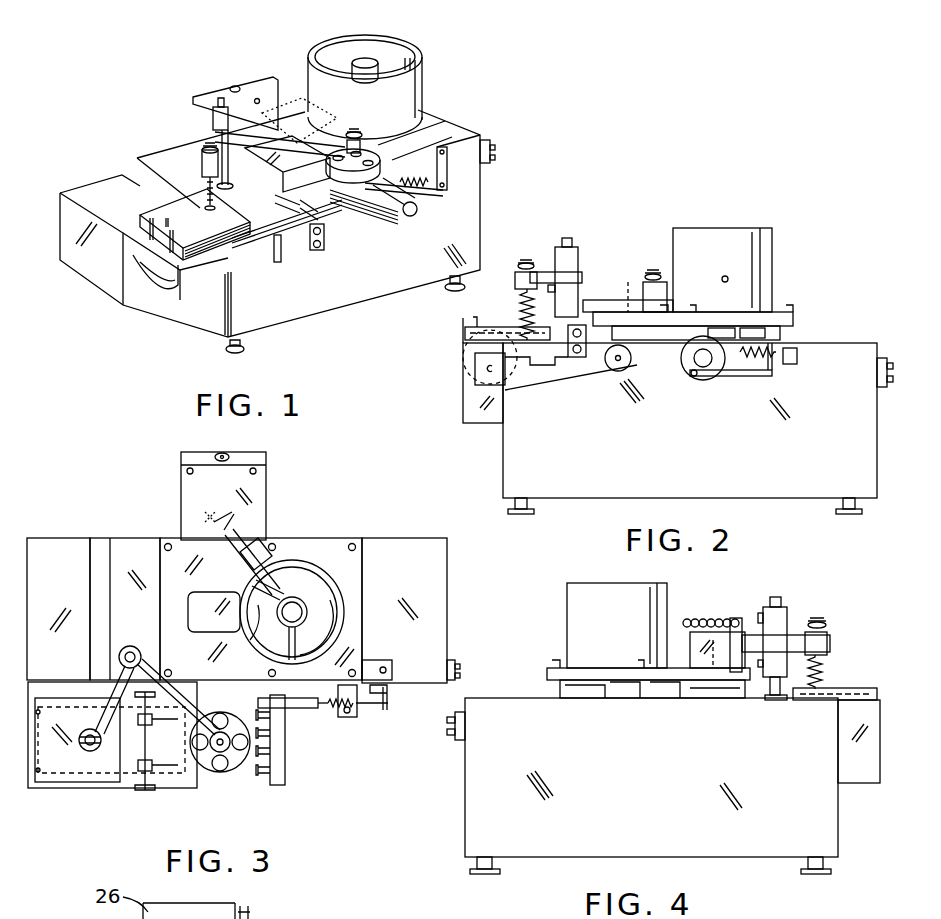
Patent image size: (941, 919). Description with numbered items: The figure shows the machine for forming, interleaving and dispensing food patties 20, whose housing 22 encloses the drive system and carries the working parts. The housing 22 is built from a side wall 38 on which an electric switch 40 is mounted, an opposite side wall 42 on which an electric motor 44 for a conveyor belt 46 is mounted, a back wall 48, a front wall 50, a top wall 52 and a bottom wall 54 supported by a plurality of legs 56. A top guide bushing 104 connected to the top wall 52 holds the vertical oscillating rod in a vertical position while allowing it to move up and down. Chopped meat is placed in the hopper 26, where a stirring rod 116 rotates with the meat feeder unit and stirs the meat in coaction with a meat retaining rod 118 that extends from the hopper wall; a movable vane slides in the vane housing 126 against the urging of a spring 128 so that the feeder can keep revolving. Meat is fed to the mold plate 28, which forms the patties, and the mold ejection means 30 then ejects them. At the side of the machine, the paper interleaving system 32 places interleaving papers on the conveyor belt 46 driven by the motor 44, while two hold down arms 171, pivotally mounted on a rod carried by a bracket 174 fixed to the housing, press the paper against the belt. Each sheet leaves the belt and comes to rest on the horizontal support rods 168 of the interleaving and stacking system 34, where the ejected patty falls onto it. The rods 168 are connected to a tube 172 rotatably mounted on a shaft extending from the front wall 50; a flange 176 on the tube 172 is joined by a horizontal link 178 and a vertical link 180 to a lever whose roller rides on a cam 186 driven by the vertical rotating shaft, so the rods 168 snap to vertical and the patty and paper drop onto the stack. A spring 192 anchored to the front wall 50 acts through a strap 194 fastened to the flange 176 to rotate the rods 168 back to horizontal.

In FIG. 1, the machine for forming, interleaving and dispensing food patties 20 is at (472, 92).
In FIG. 1, the housing 22 is at (488, 228).
In FIG. 1, the hopper 26 is at (402, 41).
In FIG. 2, the hopper 26 is at (775, 256).
In FIG. 3, the hopper 26 is at (317, 567).
In FIG. 4, the hopper 26 is at (566, 610).
In FIG. 1, the mold plate 28 is at (252, 97).
In FIG. 2, the mold plate 28 is at (664, 341).
In FIG. 3, the mold plate 28 is at (266, 490).
In FIG. 4, the mold plate 28 is at (708, 700).
In FIG. 1, the mold ejection means 30 is at (352, 128).
In FIG. 2, the mold ejection means 30 is at (648, 290).
In FIG. 3, the mold ejection means 30 is at (234, 778).
In FIG. 1, the paper interleaving system 32 is at (181, 203).
In FIG. 2, the paper interleaving system 32 is at (514, 321).
In FIG. 3, the paper interleaving system 32 is at (88, 788).
In FIG. 4, the paper interleaving system 32 is at (829, 676).
In FIG. 2, the interleaving and stacking system 34 is at (678, 388).
In FIG. 2, the side wall 38 is at (877, 447).
In FIG. 3, the side wall 38 is at (448, 583).
In FIG. 4, the side wall 38 is at (465, 813).
In FIG. 1, the electric switch 40 is at (495, 148).
In FIG. 2, the electric switch 40 is at (897, 357).
In FIG. 3, the electric switch 40 is at (454, 662).
In FIG. 4, the electric switch 40 is at (457, 741).
In FIG. 1, the opposite side wall 42 is at (205, 320).
In FIG. 2, the opposite side wall 42 is at (503, 447).
In FIG. 4, the opposite side wall 42 is at (842, 827).
In FIG. 1, the electric motor 44 is at (83, 263).
In FIG. 2, the electric motor 44 is at (466, 398).
In FIG. 3, the electric motor 44 is at (58, 550).
In FIG. 4, the electric motor 44 is at (860, 780).
In FIG. 1, the conveyor belt 46 is at (157, 277).
In FIG. 2, the conveyor belt 46 is at (468, 368).
In FIG. 3, the back wall 48 is at (133, 538).
In FIG. 4, the back wall 48 is at (609, 793).
In FIG. 1, the front wall 50 is at (375, 298).
In FIG. 2, the front wall 50 is at (795, 471).
In FIG. 3, the front wall 50 is at (305, 690).
In FIG. 1, the top wall 52 is at (458, 133).
In FIG. 2, the top wall 52 is at (842, 342).
In FIG. 3, the top wall 52 is at (417, 568).
In FIG. 4, the top wall 52 is at (494, 697).
In FIG. 1, the bottom wall 54 is at (412, 287).
In FIG. 2, the bottom wall 54 is at (775, 500).
In FIG. 4, the bottom wall 54 is at (560, 858).
In FIG. 1, the legs 56 is at (246, 346).
In FIG. 2, the legs 56 is at (514, 504).
In FIG. 4, the legs 56 is at (804, 863).
In FIG. 4, the top guide bushing 104 is at (770, 702).
In FIG. 1, the stirring rod 116 is at (417, 55).
In FIG. 3, the stirring rod 116 is at (241, 598).
In FIG. 1, the meat retaining rod 118 is at (385, 92).
In FIG. 2, the meat retaining rod 118 is at (724, 276).
In FIG. 3, the meat retaining rod 118 is at (270, 648).
In FIG. 3, the vane housing 126 is at (267, 540).
In FIG. 3, the spring 128 is at (243, 532).
In FIG. 1, the support rods 168 is at (389, 220).
In FIG. 3, the hold down arms 171 is at (168, 770).
In FIG. 1, the tube 172 is at (420, 205).
In FIG. 1, the bracket 174 is at (318, 248).
In FIG. 2, the bracket 174 is at (582, 345).
In FIG. 2, the flange 176 is at (708, 380).
In FIG. 1, the horizontal link 178 is at (434, 192).
In FIG. 2, the horizontal link 178 is at (747, 376).
In FIG. 1, the vertical link 180 is at (448, 168).
In FIG. 2, the cam 186 is at (712, 325).
In FIG. 2, the spring 192 is at (777, 357).
In FIG. 1, the strap 194 is at (392, 176).
In FIG. 2, the strap 194 is at (743, 347).